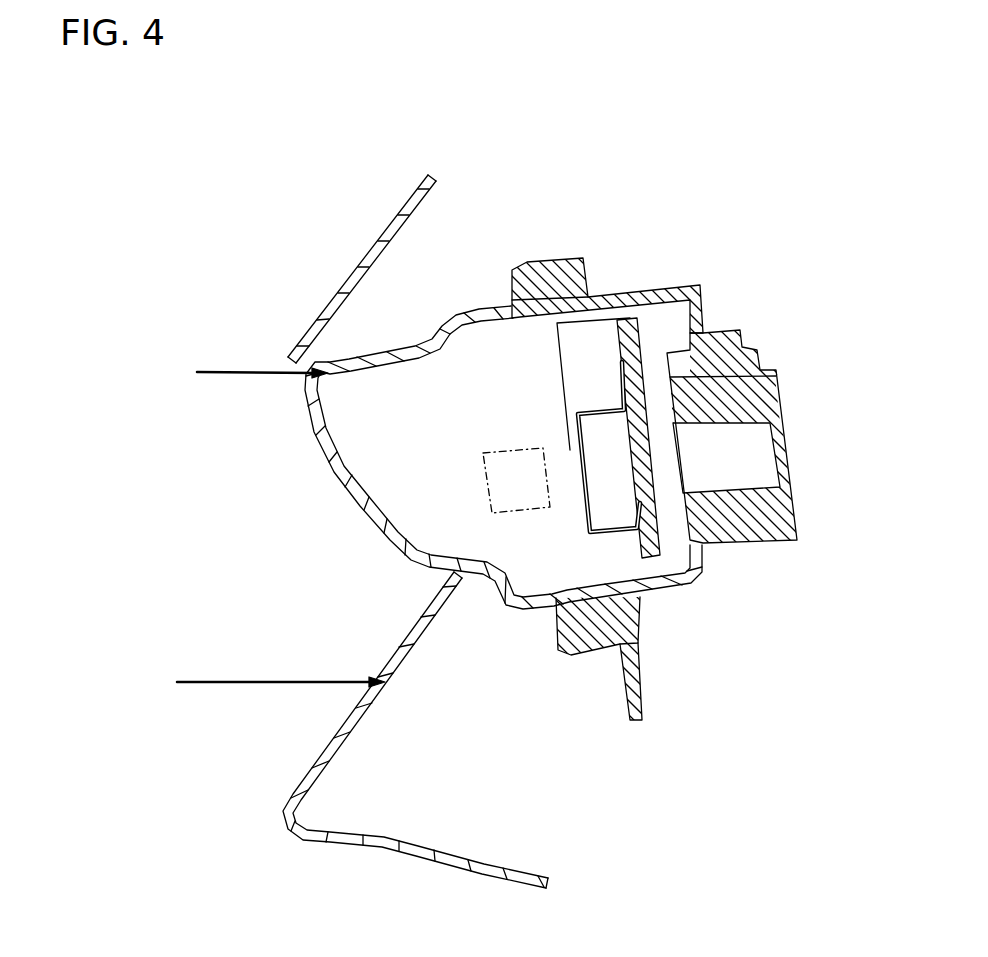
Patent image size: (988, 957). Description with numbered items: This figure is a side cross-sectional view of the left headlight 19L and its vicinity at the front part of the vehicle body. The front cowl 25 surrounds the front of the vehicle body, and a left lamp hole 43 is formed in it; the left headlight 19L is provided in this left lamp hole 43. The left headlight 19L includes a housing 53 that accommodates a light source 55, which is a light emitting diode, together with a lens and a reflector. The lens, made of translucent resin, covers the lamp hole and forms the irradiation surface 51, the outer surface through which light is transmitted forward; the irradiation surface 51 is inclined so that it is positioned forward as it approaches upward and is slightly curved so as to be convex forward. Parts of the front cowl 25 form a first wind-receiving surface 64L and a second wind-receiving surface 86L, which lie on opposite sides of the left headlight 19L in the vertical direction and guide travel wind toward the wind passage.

The front cowl 25 is at (323, 304).
The second wind-receiving surface 86L is at (322, 377).
The left lamp hole 43 is at (327, 432).
The left headlight 19L is at (494, 490).
The irradiation surface 51 is at (330, 476).
The light source 55 is at (528, 448).
The housing 53 is at (642, 296).
The first wind-receiving surface 64L is at (313, 767).